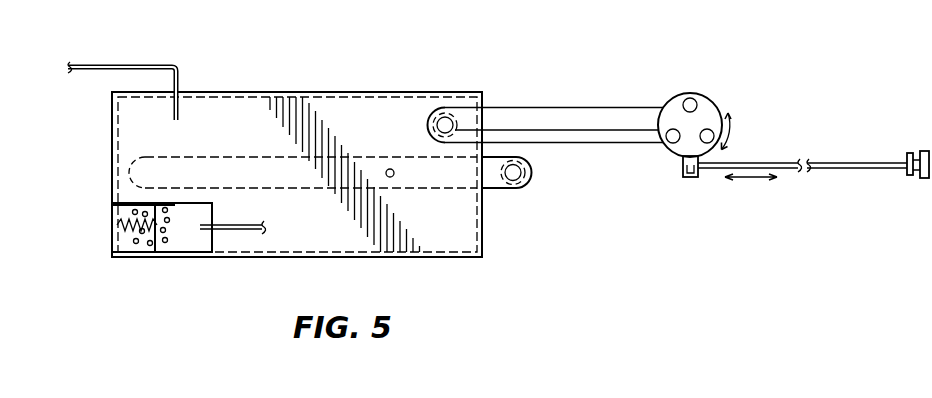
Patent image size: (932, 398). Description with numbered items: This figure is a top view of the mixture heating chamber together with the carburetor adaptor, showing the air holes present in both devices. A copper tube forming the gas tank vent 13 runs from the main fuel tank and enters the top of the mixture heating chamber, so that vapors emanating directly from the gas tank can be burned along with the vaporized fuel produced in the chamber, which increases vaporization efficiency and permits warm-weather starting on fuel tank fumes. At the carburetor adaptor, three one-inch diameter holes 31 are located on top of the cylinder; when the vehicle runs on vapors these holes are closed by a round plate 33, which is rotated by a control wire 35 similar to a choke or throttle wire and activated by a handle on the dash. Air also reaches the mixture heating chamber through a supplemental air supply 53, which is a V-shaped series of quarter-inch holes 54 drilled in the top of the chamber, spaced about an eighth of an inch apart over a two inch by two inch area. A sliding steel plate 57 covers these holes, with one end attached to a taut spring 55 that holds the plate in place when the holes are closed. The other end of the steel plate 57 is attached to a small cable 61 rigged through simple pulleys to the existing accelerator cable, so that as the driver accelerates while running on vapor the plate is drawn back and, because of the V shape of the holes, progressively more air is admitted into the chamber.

The gas tank vent 13 is at (98, 65).
The holes 31 is at (688, 101).
The round plate 33 is at (707, 108).
The control wire 35 is at (781, 164).
The supplemental air supply 53 is at (113, 214).
The holes 54 is at (148, 242).
The taut spring 55 is at (113, 228).
The sliding steel plate 57 is at (193, 240).
The small cable 61 is at (245, 225).